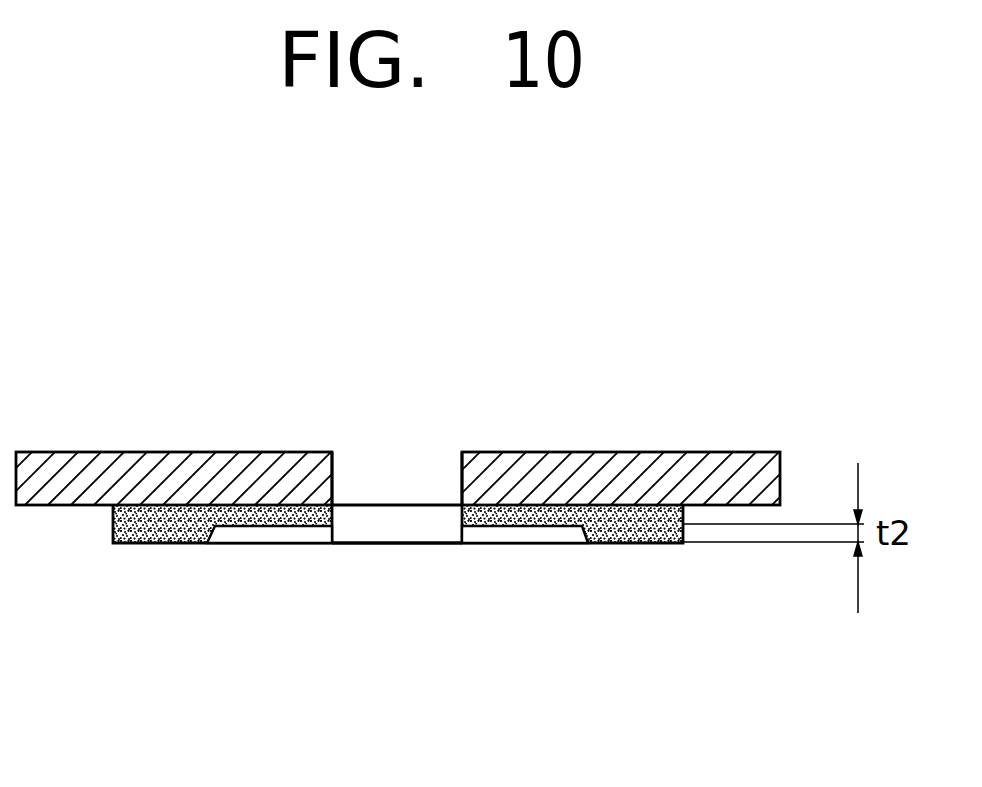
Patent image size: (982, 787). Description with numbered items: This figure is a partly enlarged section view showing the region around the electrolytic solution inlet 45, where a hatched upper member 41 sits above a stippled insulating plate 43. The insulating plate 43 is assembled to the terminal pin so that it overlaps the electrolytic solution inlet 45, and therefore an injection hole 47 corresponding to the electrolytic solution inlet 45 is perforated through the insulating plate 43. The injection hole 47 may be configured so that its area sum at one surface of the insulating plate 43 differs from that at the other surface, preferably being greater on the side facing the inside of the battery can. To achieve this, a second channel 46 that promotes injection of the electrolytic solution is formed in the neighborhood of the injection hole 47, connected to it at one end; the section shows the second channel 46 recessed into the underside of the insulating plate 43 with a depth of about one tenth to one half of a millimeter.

The polishing pad body 41 is at (246, 483).
The insulating plate 43 is at (145, 543).
The electrolytic solution inlet 45 is at (356, 450).
The second channel 46 is at (247, 528).
The injection hole 47 is at (337, 507).